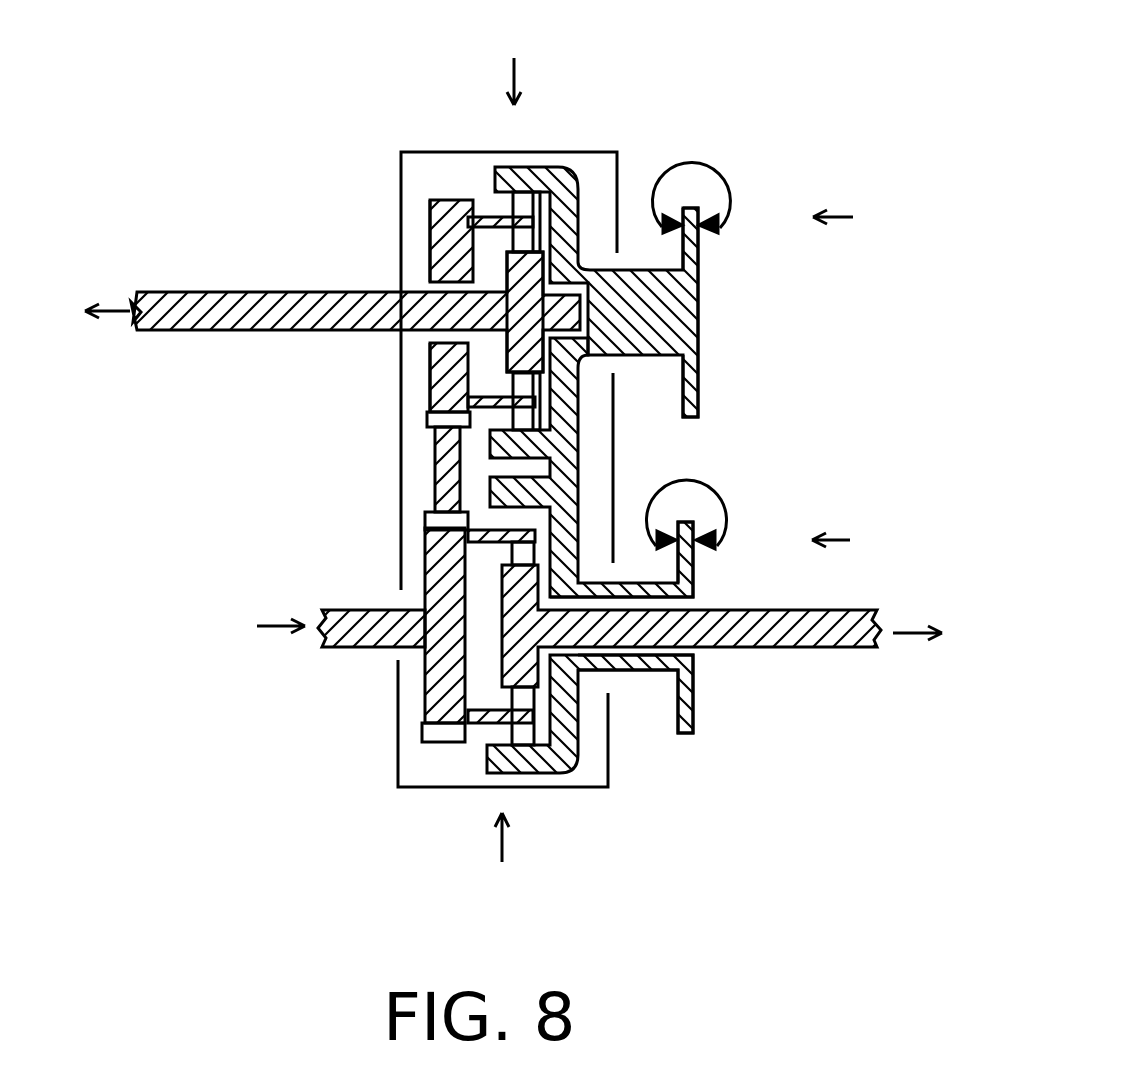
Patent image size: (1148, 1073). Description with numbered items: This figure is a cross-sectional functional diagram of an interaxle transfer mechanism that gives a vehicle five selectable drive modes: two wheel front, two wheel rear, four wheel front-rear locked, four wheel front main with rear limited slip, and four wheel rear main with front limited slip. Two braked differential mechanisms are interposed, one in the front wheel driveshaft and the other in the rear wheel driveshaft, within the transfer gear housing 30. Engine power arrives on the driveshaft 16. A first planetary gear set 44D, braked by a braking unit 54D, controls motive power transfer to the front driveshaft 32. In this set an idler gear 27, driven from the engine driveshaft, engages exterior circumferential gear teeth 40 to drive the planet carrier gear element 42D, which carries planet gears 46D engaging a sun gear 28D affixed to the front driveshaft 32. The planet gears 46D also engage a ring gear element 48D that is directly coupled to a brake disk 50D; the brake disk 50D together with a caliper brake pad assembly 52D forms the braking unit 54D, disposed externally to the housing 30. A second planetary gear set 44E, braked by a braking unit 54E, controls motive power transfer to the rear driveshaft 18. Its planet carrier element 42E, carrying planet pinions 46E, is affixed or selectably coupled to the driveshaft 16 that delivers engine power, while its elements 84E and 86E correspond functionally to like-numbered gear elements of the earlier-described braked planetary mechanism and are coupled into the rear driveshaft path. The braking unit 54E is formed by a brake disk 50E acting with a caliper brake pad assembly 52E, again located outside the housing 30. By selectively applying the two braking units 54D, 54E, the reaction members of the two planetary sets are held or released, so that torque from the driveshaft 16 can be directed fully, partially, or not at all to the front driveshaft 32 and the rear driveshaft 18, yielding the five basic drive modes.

The transfer gear housing 30 is at (402, 152).
The front driveshaft 32 is at (258, 331).
The sun gear 28D is at (507, 270).
The planet carrier gear element 42D is at (430, 235).
The exterior circumferential gear teeth 40 is at (430, 200).
The planet gears 46D is at (513, 202).
The ring gear element 48D is at (516, 167).
The brake disk 50D is at (698, 245).
The caliper brake pad assembly 52D is at (730, 205).
The braking unit 54D is at (866, 218).
The first planetary gear set 44D is at (515, 64).
The ring gear element 84E is at (562, 470).
The brake disk 50E is at (693, 562).
The caliper brake pad assembly 52E is at (726, 520).
The braking unit 54E is at (862, 541).
The idler gear 27 is at (472, 467).
The planet carrier element 42E is at (430, 545).
The driveshaft 16 is at (362, 647).
The rear driveshaft 18 is at (768, 648).
The planet pinions 46E is at (486, 747).
The sun gear element 86E is at (582, 680).
The second planetary gear set 44E is at (494, 859).